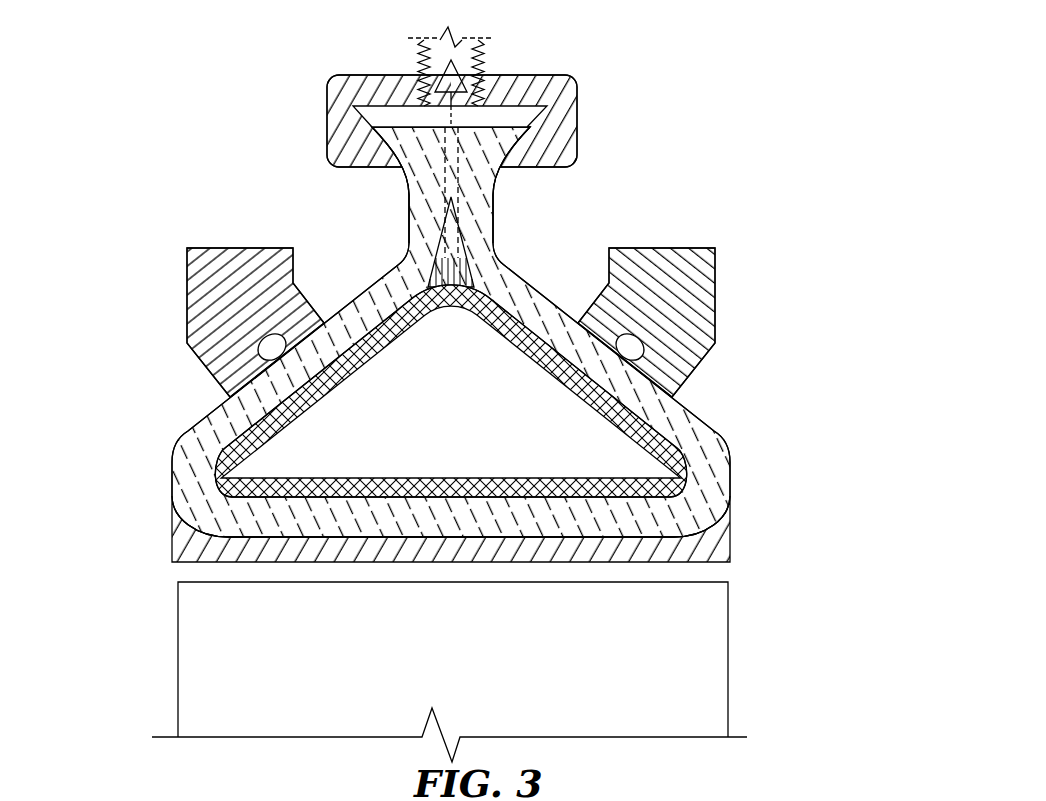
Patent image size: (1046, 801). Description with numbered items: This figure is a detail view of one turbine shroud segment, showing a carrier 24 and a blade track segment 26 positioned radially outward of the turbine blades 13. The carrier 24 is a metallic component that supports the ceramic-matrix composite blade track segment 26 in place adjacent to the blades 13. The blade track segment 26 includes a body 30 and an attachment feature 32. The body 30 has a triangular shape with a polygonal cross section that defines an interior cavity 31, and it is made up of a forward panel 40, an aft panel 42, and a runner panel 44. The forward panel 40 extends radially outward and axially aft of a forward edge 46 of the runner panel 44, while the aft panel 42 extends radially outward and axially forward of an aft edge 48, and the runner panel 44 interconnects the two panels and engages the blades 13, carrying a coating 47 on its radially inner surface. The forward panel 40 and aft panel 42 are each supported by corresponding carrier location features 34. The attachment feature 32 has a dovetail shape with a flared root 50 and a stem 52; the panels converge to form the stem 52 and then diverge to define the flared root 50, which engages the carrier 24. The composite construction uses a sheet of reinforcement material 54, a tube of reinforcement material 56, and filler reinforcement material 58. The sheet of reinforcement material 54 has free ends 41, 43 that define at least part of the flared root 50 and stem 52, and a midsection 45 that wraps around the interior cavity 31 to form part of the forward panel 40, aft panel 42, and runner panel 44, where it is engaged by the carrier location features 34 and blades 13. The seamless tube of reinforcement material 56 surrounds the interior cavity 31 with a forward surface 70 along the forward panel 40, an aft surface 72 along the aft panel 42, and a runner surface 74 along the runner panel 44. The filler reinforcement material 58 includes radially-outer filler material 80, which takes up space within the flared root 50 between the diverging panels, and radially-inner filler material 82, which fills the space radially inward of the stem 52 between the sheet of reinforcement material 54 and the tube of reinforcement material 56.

The blades 13 is at (740, 683).
The carrier 24 is at (742, 110).
The blade track segment 26 is at (845, 233).
The body 30 is at (762, 445).
The interior cavity 31 is at (473, 421).
The attachment feature 32 is at (315, 184).
The carrier location features 34 is at (182, 283).
The forward panel 40 is at (178, 410).
The free end 41 is at (378, 116).
The aft panel 42 is at (705, 378).
The free end 43 is at (517, 117).
The runner panel 44 is at (481, 573).
The midsection 45 is at (152, 431).
The forward edge 46 is at (168, 546).
The coating 47 is at (403, 550).
The aft edge 48 is at (740, 549).
The flared root 50 is at (392, 110).
The stem 52 is at (403, 200).
The sheet of reinforcement material 54 is at (698, 428).
The tube of reinforcement material 56 is at (693, 480).
The filler reinforcement material 58 is at (556, 215).
The forward surface 70 is at (333, 392).
The aft surface 72 is at (545, 385).
The runner surface 74 is at (480, 478).
The radially-outer filler material 80 is at (458, 153).
The radially-inner filler material 82 is at (452, 254).